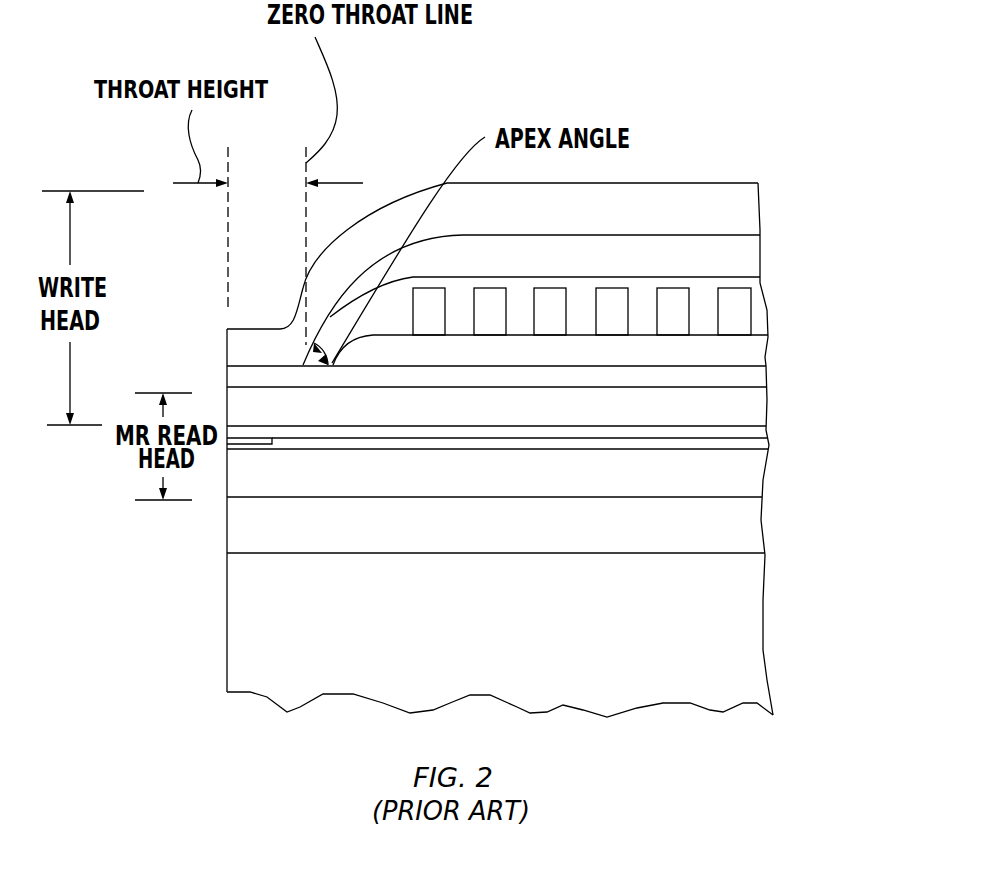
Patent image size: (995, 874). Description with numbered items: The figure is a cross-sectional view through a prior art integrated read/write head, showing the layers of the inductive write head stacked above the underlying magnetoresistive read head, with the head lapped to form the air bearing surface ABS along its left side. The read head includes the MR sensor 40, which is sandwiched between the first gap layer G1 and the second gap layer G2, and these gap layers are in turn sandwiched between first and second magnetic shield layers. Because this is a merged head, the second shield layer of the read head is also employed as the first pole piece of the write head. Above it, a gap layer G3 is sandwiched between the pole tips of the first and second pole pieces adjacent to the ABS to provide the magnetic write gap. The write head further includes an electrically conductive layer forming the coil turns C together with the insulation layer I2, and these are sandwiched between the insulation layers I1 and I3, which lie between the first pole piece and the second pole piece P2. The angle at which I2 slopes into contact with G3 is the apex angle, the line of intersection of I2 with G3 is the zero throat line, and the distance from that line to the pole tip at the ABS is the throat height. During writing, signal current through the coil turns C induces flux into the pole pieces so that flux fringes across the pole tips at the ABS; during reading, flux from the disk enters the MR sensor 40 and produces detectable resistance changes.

The MR sensor 40 is at (258, 437).
The second pole piece P2 is at (492, 256).
The third insulation layer I3 is at (531, 300).
The second insulation layer I2 is at (545, 303).
The first insulation layer I1 is at (763, 351).
The coil turns C is at (610, 298).
The gap layer G3 is at (760, 380).
The second gap layer G2 is at (767, 436).
The first gap layer G1 is at (768, 449).
The air bearing surface ABS is at (227, 612).